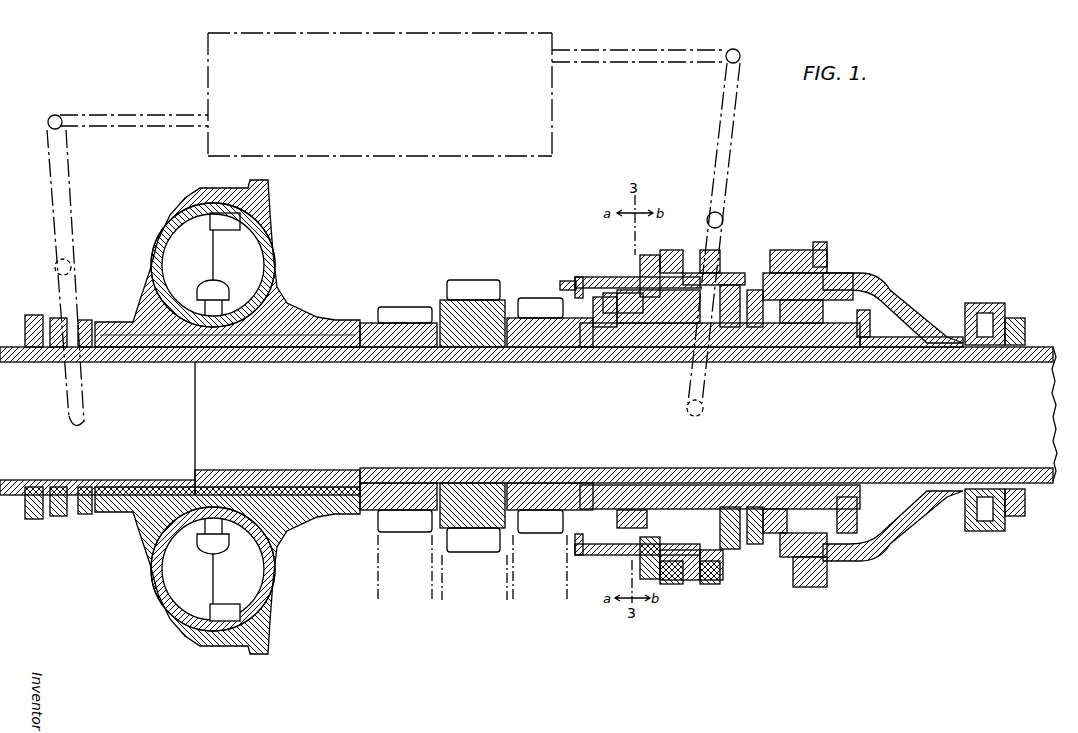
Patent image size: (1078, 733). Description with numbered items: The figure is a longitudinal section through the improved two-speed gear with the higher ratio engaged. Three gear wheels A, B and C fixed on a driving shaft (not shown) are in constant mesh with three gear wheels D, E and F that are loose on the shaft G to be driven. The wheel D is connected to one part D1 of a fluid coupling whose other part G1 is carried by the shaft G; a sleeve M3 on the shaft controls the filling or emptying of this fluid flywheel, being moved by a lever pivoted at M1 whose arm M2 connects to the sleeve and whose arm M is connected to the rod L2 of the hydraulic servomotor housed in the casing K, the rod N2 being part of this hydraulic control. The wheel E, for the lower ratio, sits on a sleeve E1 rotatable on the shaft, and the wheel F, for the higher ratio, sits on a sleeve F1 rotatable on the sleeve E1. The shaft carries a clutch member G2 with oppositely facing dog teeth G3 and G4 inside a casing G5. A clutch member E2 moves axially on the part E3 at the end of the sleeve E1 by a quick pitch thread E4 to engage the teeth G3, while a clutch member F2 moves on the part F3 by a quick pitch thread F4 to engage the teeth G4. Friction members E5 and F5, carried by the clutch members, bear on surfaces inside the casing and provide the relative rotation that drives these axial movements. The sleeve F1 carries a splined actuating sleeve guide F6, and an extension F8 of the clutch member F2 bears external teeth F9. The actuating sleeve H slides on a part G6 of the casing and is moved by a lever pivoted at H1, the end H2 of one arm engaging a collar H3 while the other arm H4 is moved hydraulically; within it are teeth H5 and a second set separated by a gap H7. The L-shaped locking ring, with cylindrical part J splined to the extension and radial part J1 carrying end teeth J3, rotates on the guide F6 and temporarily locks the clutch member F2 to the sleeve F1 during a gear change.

The casing K is at (391, 76).
The rod L2 is at (127, 117).
The lever arm M is at (65, 166).
The lever pivot M1 is at (57, 266).
The lever arm M2 is at (63, 412).
The sleeve M3 is at (130, 348).
The control rod N2 is at (597, 55).
The lever arm H4 is at (738, 83).
The lever pivot H1 is at (730, 158).
The lever arm end H2 is at (703, 412).
The driven shaft G is at (435, 354).
The fluid coupling part D1 is at (267, 230).
The fluid coupling part G1 is at (257, 250).
The gear wheel D is at (403, 315).
The gear wheel E is at (468, 292).
The gear wheel F is at (537, 307).
The sleeve E1 is at (588, 344).
The gap H7 is at (577, 276).
The teeth H5 is at (573, 280).
The actuating sleeve H is at (632, 279).
The actuating sleeve guide F6 is at (616, 300).
The sleeve-like extension F8 is at (658, 338).
The teeth F9 is at (662, 278).
The friction member F5 is at (738, 280).
The sleeve part F3 is at (745, 328).
The quick pitch thread F4 is at (757, 330).
The clutch member F2 is at (760, 280).
The clutch member G2 is at (790, 273).
The dog teeth G3 is at (813, 303).
The clutch member E2 is at (860, 313).
The quick pitch thread E4 is at (867, 327).
The sleeve part E3 is at (853, 341).
The gear wheel A is at (398, 541).
The gear wheel B is at (473, 541).
The gear wheel C is at (550, 541).
The sleeve F1 is at (648, 503).
The radially projecting part of locking ring J1 is at (607, 548).
The end teeth J3 is at (617, 556).
The cylindrical part of locking ring J is at (673, 574).
The collar H3 is at (705, 580).
The casing part G6 is at (762, 540).
The dog teeth G4 is at (779, 558).
The friction member E5 is at (853, 548).
The casing G5 is at (892, 517).